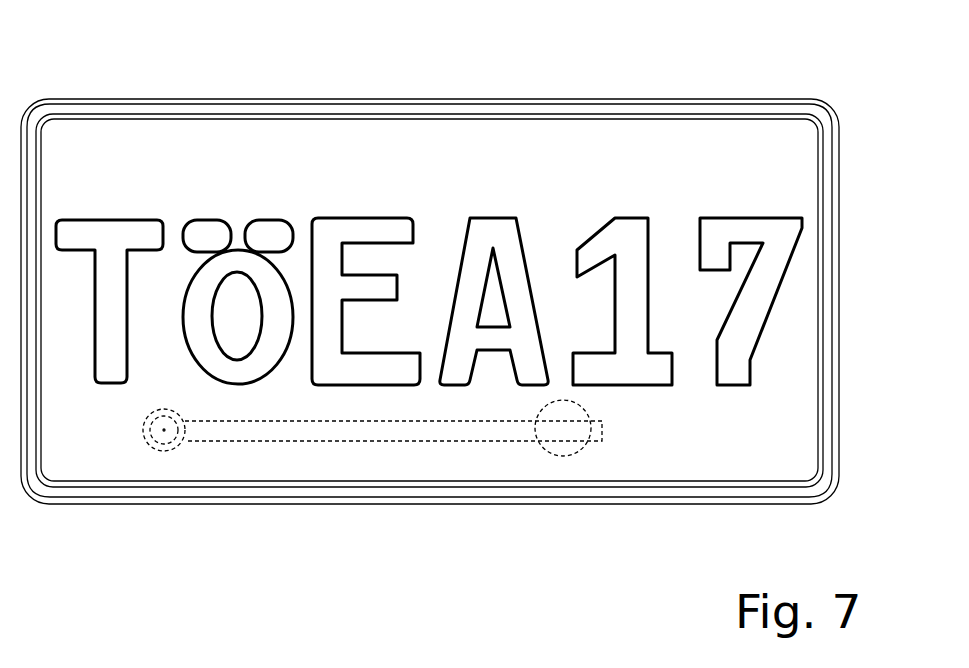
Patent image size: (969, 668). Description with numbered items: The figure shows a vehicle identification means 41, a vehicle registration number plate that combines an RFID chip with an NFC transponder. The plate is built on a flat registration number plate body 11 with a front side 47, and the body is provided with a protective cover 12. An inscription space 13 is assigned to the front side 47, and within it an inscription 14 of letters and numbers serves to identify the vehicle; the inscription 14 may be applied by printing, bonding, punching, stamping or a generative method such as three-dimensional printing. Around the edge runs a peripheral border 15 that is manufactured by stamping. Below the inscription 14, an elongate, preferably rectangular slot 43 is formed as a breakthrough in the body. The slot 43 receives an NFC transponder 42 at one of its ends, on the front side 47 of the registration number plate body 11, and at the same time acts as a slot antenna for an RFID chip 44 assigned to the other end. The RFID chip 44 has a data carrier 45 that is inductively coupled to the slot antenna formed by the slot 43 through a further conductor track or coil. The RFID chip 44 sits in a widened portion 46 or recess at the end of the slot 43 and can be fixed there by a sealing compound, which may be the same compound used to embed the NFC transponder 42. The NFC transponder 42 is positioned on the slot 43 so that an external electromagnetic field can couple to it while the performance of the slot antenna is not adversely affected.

The vehicle identification means 41 is at (573, 88).
The registration number plate body 11 is at (108, 143).
The protective cover 12 is at (217, 147).
The inscription space 13 is at (697, 168).
The inscription 14 is at (330, 225).
The peripheral border 15 is at (700, 490).
The NFC transponder 42 is at (565, 445).
The slot 43 is at (360, 430).
The RFID chip 44 is at (167, 437).
The data carrier 45 is at (163, 430).
The widened portion 46 is at (182, 447).
The front side 47 is at (793, 462).